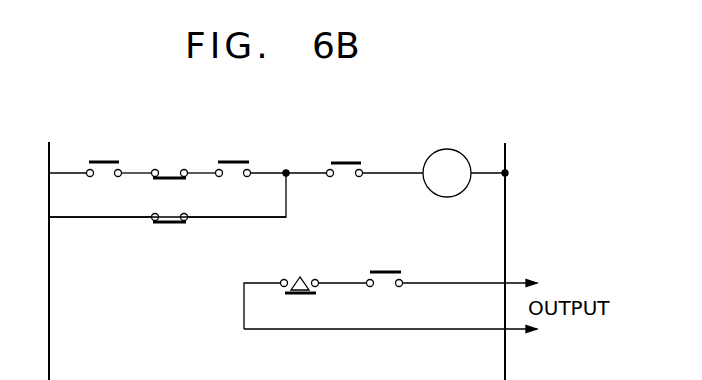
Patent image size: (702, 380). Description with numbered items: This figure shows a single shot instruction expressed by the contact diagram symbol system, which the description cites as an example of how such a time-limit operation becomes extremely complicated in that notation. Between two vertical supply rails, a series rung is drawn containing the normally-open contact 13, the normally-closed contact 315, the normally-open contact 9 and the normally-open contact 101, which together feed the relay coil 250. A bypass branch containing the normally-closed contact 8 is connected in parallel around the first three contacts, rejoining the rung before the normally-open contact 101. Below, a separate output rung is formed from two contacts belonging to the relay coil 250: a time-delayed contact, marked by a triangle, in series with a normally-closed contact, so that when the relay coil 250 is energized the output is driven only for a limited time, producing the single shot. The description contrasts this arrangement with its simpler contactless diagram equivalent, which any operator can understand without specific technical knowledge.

The normally-open contact 13 is at (104, 152).
The normally-closed contact 315 is at (168, 152).
The normally-open contact 9 is at (233, 152).
The normally-open contact 101 is at (343, 152).
The normally-closed contact 8 is at (170, 233).
The relay coil 250 is at (390, 241).